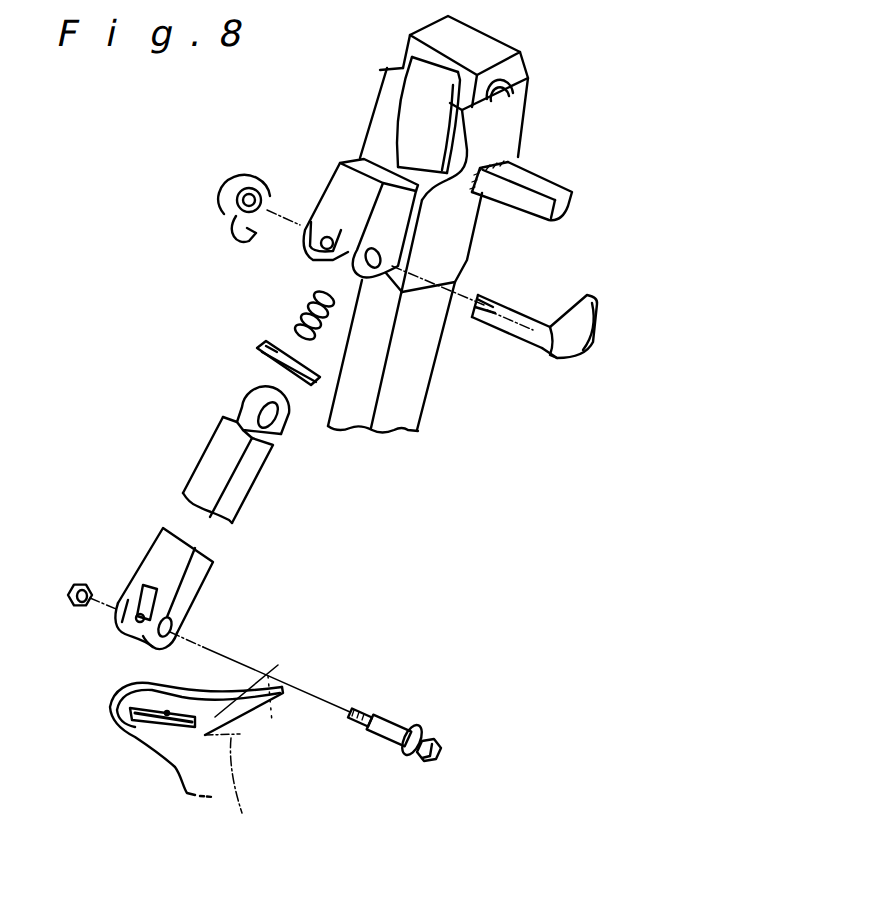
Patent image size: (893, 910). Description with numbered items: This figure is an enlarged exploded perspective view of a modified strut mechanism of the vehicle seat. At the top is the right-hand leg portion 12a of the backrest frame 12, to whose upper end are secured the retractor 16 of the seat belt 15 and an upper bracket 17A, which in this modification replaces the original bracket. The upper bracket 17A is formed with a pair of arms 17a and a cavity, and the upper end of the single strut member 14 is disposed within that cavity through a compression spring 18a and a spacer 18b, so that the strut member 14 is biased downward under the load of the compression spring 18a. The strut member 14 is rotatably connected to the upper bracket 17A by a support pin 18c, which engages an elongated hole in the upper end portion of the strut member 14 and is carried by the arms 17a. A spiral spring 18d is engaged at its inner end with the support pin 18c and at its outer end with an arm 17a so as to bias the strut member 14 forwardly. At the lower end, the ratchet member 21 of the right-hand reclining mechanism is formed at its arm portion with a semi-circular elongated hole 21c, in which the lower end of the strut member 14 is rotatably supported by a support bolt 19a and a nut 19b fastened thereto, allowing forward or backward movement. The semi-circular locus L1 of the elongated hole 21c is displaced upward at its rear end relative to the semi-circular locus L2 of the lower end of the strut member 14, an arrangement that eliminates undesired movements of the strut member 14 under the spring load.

The backrest frame 12 is at (556, 173).
The right-hand leg portion 12a is at (413, 406).
The strut member 14 is at (186, 476).
The seat belt 15 is at (390, 108).
The retractor 16 is at (527, 48).
The upper bracket 17A is at (333, 156).
The arms 17a is at (318, 259).
The compression spring 18a is at (300, 316).
The spacer 18b is at (259, 353).
The support pin 18c is at (519, 311).
The spiral spring 18d is at (226, 186).
The support bolt 19a is at (400, 722).
The nut 19b is at (84, 582).
The ratchet member 21 is at (258, 753).
The semi-circular elongated hole 21c is at (167, 713).
The semi-circular locus L1 is at (259, 686).
The semi-circular locus L2 is at (229, 788).